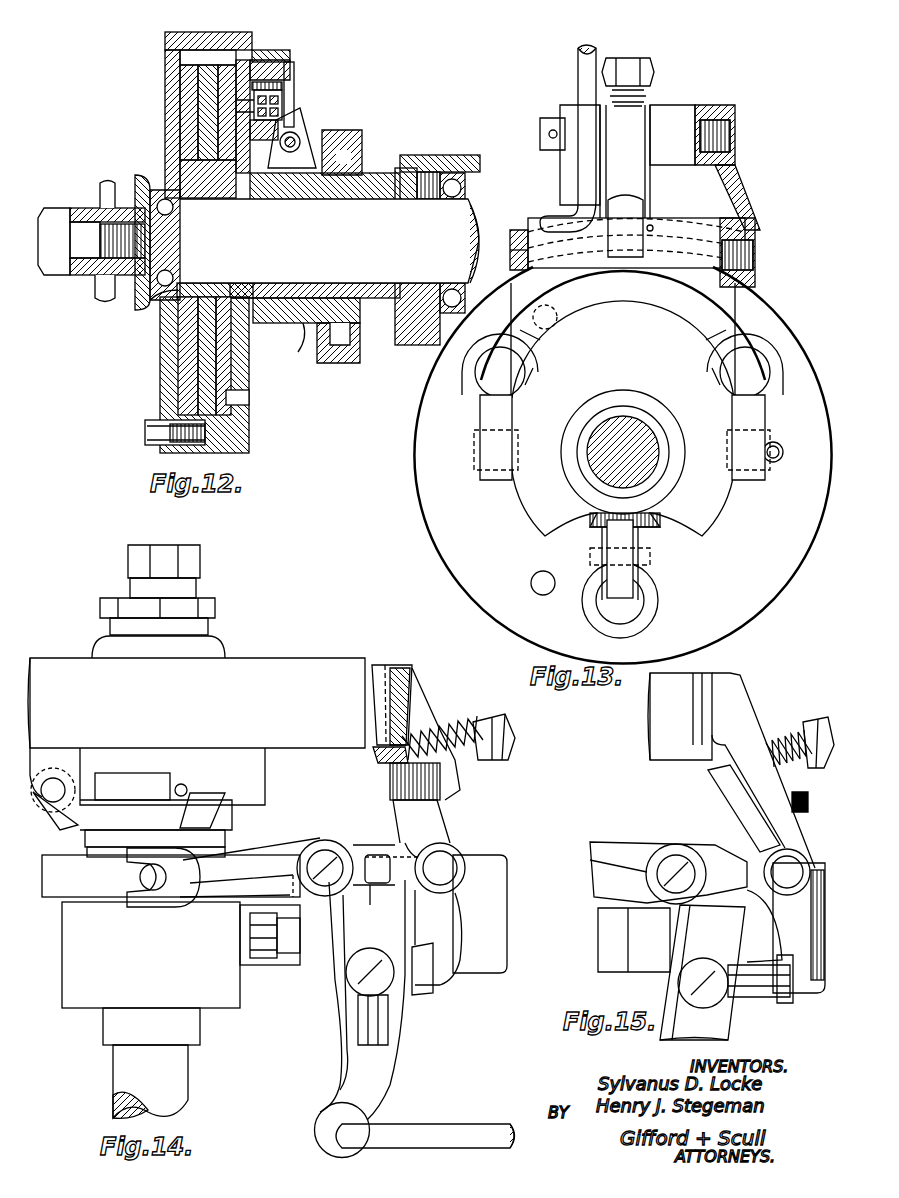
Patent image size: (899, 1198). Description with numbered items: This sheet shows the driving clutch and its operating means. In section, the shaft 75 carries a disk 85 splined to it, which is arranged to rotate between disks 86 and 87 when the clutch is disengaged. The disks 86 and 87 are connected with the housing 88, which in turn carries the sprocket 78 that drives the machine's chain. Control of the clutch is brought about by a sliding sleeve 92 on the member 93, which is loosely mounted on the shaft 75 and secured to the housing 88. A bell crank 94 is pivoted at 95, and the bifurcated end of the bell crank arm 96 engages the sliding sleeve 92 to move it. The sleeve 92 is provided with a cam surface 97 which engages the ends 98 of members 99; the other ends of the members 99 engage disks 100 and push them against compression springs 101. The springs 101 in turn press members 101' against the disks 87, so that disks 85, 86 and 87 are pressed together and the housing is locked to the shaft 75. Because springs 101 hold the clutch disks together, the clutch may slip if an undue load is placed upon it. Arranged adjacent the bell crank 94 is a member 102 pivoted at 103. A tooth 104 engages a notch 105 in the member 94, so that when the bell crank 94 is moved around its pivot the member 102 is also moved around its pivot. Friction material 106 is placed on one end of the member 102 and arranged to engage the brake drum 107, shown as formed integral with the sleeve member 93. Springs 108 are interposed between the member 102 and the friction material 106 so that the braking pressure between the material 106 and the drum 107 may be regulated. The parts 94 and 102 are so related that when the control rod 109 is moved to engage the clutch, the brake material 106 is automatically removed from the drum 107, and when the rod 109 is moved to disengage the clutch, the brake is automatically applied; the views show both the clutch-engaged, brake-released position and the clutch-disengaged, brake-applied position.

In FIG. 12, the shaft 75 is at (476, 226).
In FIG. 13, the shaft 75 is at (640, 473).
In FIG. 14, the shaft 75 is at (175, 1075).
In FIG. 12, the sprocket 78 is at (110, 184).
In FIG. 14, the sprocket 78 is at (217, 617).
In FIG. 12, the disk 85 is at (208, 59).
In FIG. 12, the disk 86 is at (185, 96).
In FIG. 12, the disk 87 is at (246, 64).
In FIG. 12, the housing 88 is at (170, 132).
In FIG. 12, the sliding sleeve 92 is at (398, 170).
In FIG. 14, the sliding sleeve 92 is at (60, 884).
In FIG. 12, the member 93 is at (442, 162).
In FIG. 13, the bell crank 94 is at (622, 486).
In FIG. 14, the bell crank 94 is at (392, 1054).
In FIG. 15, the bell crank 94 is at (715, 1022).
In FIG. 13, the pivot 95 is at (756, 250).
In FIG. 14, the pivot 95 is at (322, 850).
In FIG. 12, the bell crank arm 96 is at (352, 140).
In FIG. 13, the bell crank arm 96 is at (728, 330).
In FIG. 14, the bell crank arm 96 is at (256, 848).
In FIG. 15, the bell crank arm 96 is at (625, 848).
In FIG. 12, the cam surface 97 is at (305, 328).
In FIG. 12, the ends 98 is at (348, 140).
In FIG. 12, the members 99 is at (304, 130).
In FIG. 14, the members 99 is at (212, 798).
In FIG. 12, the disks 100 is at (290, 98).
In FIG. 12, the compression springs 101 is at (309, 83).
In FIG. 12, the members 101' is at (297, 52).
In FIG. 14, the member 102 is at (466, 845).
In FIG. 15, the member 102 is at (790, 834).
In FIG. 14, the pivot 103 is at (454, 866).
In FIG. 14, the tooth 104 is at (388, 852).
In FIG. 15, the tooth 104 is at (740, 926).
In FIG. 14, the notch 105 is at (370, 886).
In FIG. 14, the friction material 106 is at (380, 665).
In FIG. 15, the friction material 106 is at (708, 673).
In FIG. 12, the brake drum 107 is at (250, 40).
In FIG. 13, the brake drum 107 is at (440, 508).
In FIG. 14, the brake drum 107 is at (305, 655).
In FIG. 15, the brake drum 107 is at (665, 722).
In FIG. 13, the springs 108 is at (655, 94).
In FIG. 14, the springs 108 is at (448, 738).
In FIG. 15, the springs 108 is at (782, 736).
In FIG. 13, the control rod 109 is at (578, 80).
In FIG. 14, the control rod 109 is at (486, 1116).